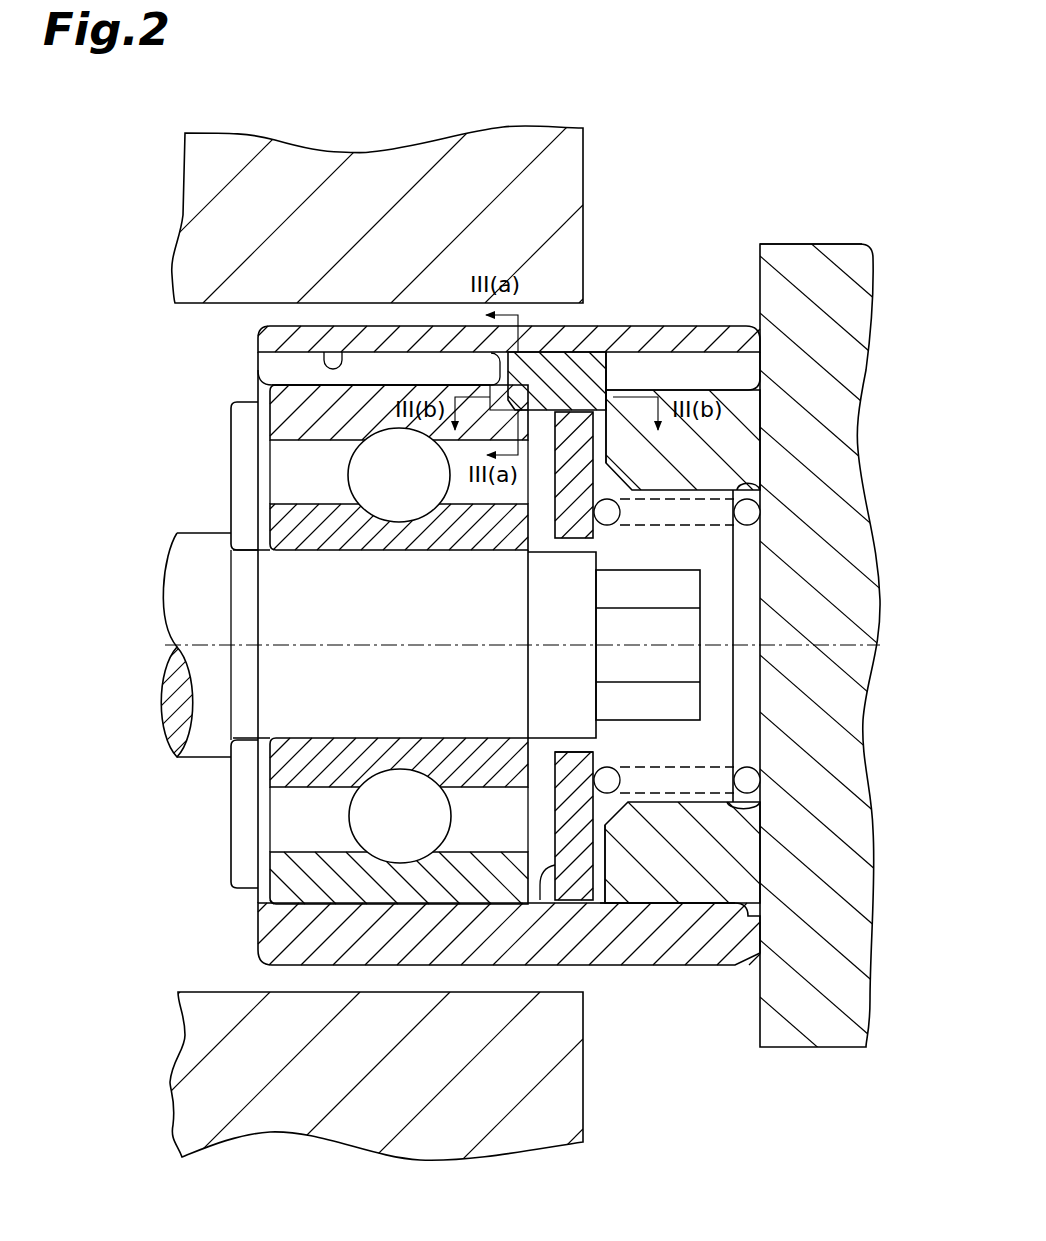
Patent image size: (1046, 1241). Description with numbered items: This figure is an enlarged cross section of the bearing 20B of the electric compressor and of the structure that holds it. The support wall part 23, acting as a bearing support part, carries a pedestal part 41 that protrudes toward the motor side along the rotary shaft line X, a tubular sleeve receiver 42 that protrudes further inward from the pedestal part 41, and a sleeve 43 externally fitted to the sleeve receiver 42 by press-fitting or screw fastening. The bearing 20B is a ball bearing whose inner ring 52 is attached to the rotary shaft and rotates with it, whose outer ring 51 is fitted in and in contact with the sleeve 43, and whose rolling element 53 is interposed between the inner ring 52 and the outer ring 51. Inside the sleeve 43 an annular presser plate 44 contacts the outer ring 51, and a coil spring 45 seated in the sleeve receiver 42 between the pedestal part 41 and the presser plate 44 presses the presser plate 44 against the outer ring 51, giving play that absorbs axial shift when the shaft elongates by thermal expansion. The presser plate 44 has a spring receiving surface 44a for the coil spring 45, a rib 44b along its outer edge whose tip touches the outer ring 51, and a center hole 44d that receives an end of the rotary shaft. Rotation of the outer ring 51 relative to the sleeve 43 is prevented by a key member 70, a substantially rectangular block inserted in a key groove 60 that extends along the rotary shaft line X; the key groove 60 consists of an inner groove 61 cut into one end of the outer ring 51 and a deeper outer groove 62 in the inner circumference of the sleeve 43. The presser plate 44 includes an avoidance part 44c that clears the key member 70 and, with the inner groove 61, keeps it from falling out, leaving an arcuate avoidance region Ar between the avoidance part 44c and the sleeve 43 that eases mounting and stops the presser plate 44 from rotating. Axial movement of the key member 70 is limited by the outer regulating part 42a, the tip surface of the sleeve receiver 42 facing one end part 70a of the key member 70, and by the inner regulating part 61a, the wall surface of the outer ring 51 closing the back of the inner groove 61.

The bearing 20B is at (288, 908).
The support wall part 23 is at (843, 240).
The pedestal part 41 is at (793, 258).
The sleeve receiver 42 is at (690, 887).
The outer regulating part 42a is at (608, 440).
The sleeve 43 is at (645, 943).
The presser plate 44 is at (700, 878).
The spring receiving surface 44a is at (597, 763).
The rib 44b is at (563, 858).
The avoidance part 44c is at (613, 374).
The center hole 44d is at (597, 553).
The coil spring 45 is at (680, 838).
The outer ring 51 is at (290, 405).
The inner ring 52 is at (290, 515).
The rolling element 53 is at (400, 470).
The key groove 60 is at (398, 86).
The inner groove 61 is at (500, 410).
The inner regulating part 61a is at (495, 376).
The outer groove 62 is at (336, 356).
The key member 70 is at (575, 350).
The one end part 70a is at (612, 388).
The avoidance region Ar is at (644, 336).
The rotary shaft line X is at (832, 640).